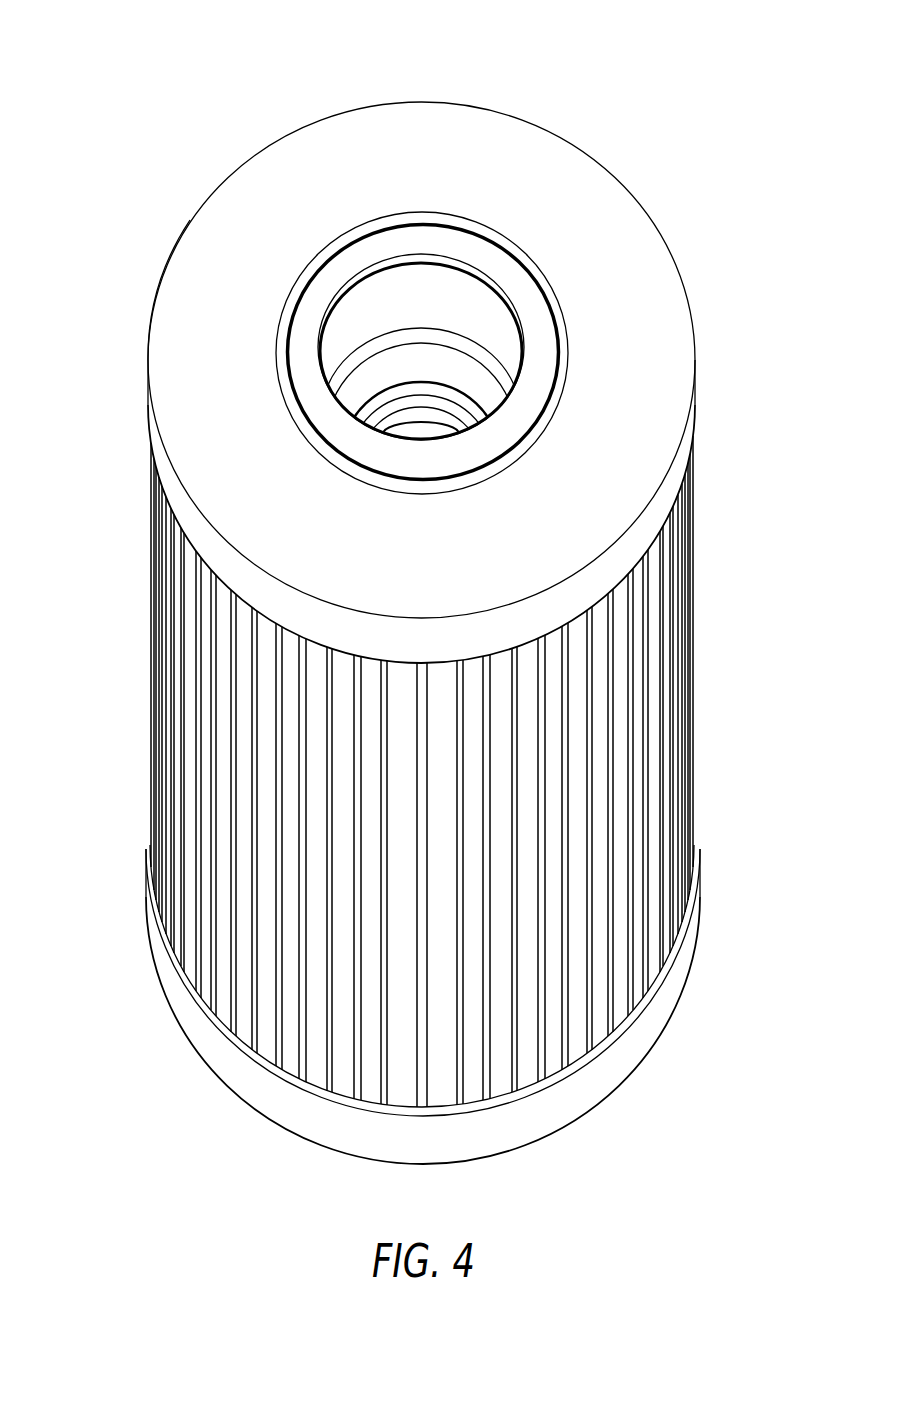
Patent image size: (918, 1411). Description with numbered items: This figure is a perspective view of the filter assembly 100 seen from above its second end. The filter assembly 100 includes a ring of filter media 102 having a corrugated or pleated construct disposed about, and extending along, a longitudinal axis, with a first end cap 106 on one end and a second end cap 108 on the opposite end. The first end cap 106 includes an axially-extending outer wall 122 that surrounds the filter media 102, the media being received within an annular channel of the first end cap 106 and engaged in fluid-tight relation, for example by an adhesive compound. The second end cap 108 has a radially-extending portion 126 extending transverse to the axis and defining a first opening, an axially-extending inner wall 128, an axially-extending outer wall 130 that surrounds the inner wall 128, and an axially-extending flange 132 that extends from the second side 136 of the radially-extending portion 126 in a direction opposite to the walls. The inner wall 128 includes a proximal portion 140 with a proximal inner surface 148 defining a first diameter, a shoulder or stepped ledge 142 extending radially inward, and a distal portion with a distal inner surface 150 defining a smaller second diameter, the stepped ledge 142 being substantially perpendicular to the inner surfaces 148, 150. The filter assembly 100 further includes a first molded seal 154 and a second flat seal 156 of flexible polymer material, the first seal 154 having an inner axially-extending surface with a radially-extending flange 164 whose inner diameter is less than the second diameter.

The filter assembly 100 is at (103, 68).
The ring of filter media 102 is at (668, 752).
The first end cap 106 is at (445, 1006).
The second end cap 108 is at (418, 356).
The axially-extending outer portion or wall 122 is at (262, 1067).
The radially-extending portion 126 is at (660, 300).
The axially-extending inner portion or wall 128 is at (463, 296).
The axially-extending outer portion or wall 130 is at (620, 557).
The axially-extending portion or flange 132 is at (463, 483).
The second side 136 is at (183, 345).
The proximal portion 140 is at (365, 310).
The shoulder or stepped ledge 142 is at (347, 367).
The proximal inner surface 148 is at (428, 309).
The distal inner surface 150 is at (428, 374).
The first molded seal 154 is at (383, 413).
The second flat seal 156 is at (424, 240).
The radially-extending flange 164 is at (457, 423).